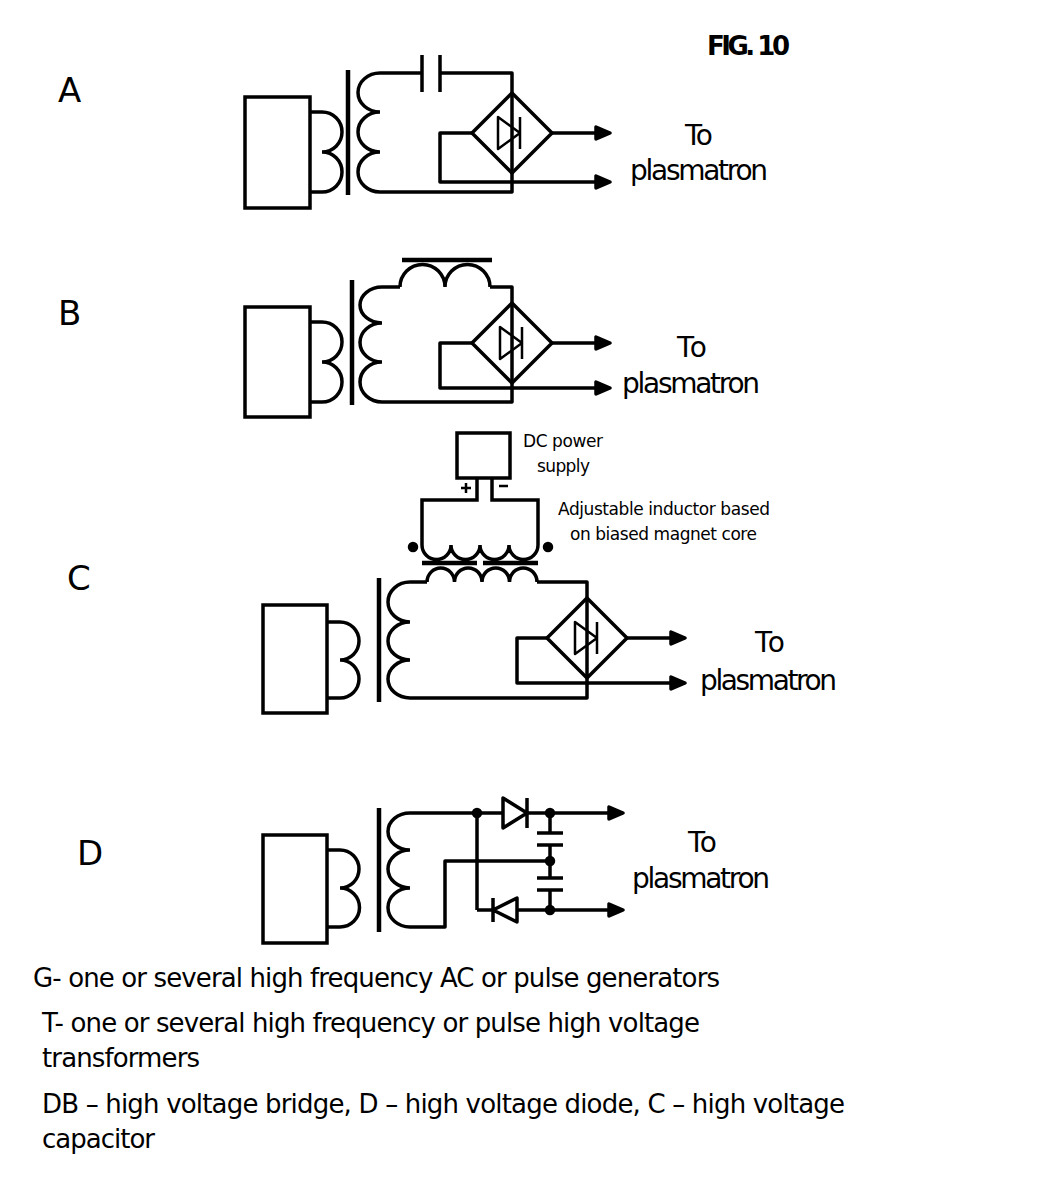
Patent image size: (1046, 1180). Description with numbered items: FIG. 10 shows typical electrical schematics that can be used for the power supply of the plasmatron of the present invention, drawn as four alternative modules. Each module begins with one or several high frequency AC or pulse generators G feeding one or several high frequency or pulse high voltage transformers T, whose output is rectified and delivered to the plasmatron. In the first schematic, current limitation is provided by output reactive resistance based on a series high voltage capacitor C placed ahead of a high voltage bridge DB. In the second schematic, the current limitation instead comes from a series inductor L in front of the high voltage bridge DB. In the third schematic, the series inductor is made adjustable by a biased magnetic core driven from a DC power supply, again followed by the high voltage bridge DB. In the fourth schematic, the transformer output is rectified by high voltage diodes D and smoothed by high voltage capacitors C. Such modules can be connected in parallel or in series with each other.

The high frequency AC or pulse generator G is at (286, 520).
The high frequency or pulse high voltage transformer T is at (360, 484).
The high voltage bridge DB is at (549, 380).
The high voltage diode D is at (510, 844).
The high voltage capacitor C is at (505, 465).
The inductor L is at (507, 257).